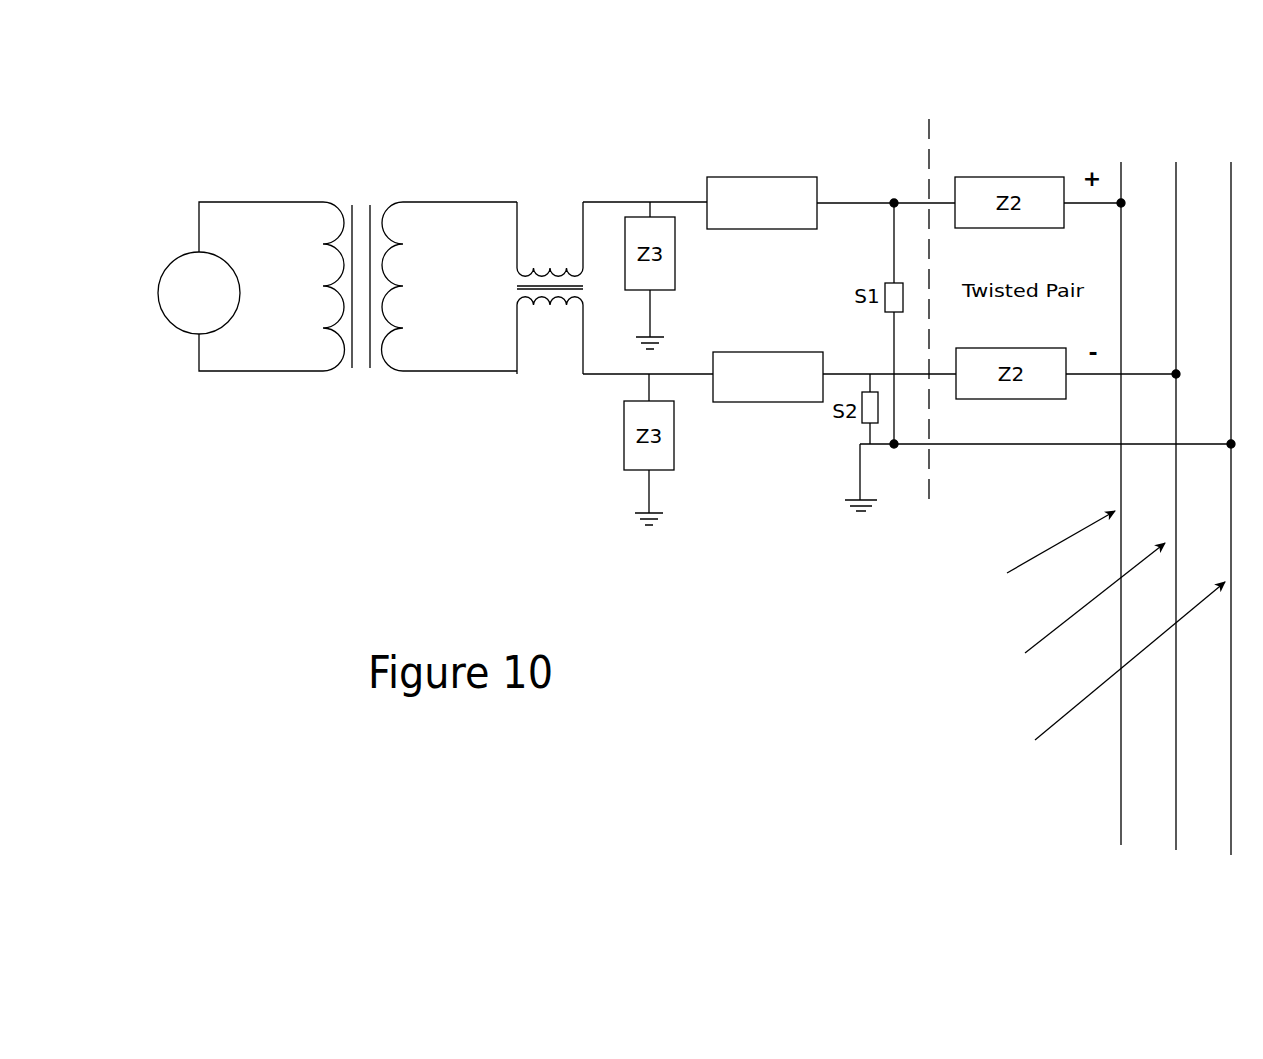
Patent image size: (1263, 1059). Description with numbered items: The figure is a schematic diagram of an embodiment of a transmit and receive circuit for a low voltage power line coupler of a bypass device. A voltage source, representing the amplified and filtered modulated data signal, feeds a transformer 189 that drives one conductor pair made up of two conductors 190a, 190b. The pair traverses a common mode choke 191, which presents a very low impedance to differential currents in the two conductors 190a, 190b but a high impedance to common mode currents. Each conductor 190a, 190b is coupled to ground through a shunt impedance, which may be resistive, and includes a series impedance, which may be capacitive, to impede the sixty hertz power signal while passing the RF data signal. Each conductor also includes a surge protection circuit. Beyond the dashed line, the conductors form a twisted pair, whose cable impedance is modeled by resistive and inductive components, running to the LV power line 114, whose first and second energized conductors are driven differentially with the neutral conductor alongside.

The transformer 189 is at (347, 387).
The common mode choke 191 is at (553, 340).
The conductor 190a is at (914, 192).
The conductor 190b is at (692, 380).
The LV power line 114 is at (1140, 142).